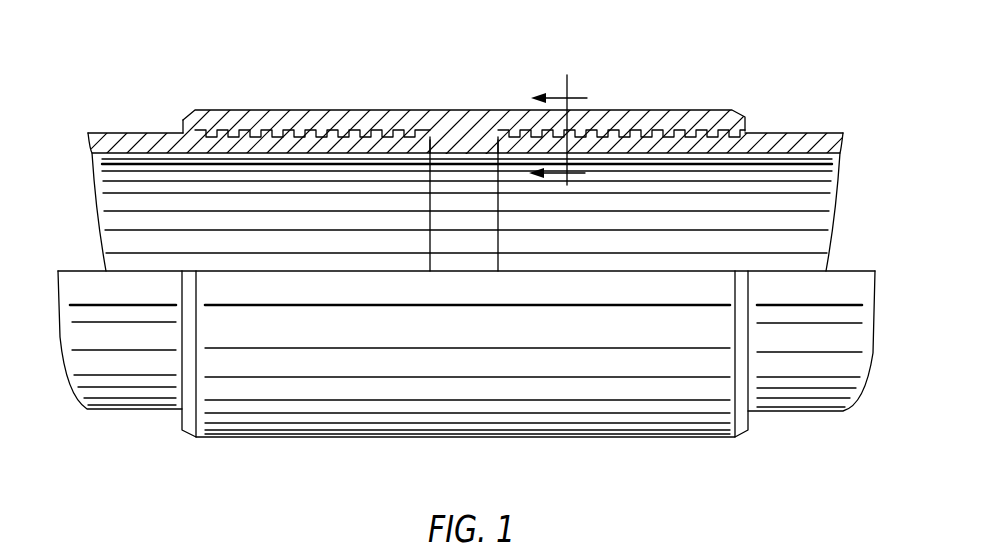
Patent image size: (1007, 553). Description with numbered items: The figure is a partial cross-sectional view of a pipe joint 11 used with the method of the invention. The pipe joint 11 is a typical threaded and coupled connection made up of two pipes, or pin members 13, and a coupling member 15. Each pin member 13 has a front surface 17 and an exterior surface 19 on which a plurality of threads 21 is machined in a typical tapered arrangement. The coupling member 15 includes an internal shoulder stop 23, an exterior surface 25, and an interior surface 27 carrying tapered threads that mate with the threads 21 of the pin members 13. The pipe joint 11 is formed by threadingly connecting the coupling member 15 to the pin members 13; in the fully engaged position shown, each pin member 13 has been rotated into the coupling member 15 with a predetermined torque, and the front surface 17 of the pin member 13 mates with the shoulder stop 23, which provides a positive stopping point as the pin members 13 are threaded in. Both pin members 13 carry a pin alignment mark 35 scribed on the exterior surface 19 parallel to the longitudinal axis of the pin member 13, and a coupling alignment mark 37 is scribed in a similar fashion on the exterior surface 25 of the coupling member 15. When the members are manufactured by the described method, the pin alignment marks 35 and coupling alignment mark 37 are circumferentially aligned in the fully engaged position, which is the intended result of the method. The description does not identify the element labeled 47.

The pipe joint 11 is at (309, 64).
The pin member 13 is at (90, 392).
The coupling member 15 is at (243, 437).
The front surface 17 is at (437, 150).
The exterior surface 19 is at (140, 377).
The threads 21 is at (346, 130).
The internal shoulder stop 23 is at (420, 152).
The exterior surface 25 is at (333, 387).
The interior surface 27 is at (118, 190).
The pin alignment mark 35 is at (93, 307).
The coupling alignment mark 37 is at (570, 274).
The sleeve 47 is at (367, 138).